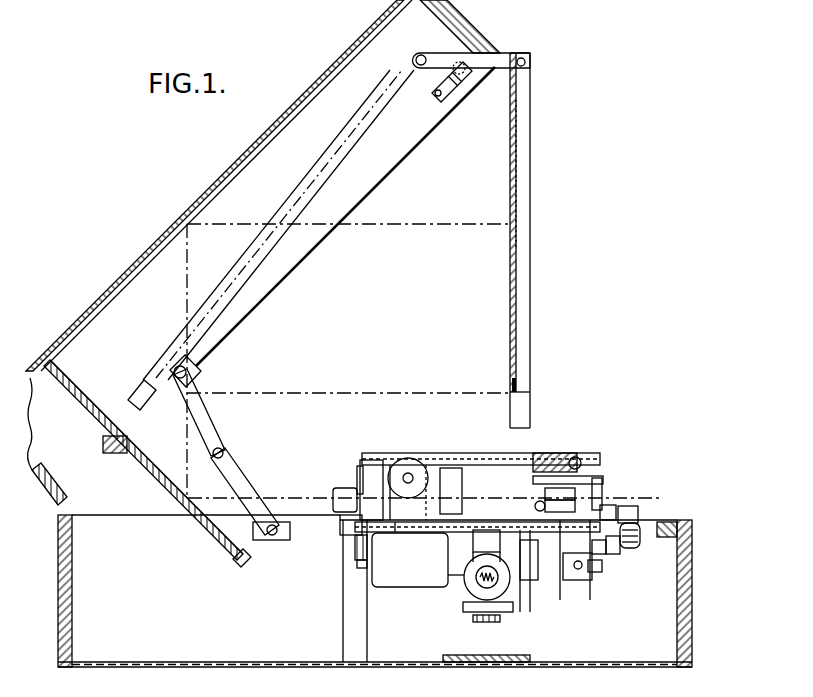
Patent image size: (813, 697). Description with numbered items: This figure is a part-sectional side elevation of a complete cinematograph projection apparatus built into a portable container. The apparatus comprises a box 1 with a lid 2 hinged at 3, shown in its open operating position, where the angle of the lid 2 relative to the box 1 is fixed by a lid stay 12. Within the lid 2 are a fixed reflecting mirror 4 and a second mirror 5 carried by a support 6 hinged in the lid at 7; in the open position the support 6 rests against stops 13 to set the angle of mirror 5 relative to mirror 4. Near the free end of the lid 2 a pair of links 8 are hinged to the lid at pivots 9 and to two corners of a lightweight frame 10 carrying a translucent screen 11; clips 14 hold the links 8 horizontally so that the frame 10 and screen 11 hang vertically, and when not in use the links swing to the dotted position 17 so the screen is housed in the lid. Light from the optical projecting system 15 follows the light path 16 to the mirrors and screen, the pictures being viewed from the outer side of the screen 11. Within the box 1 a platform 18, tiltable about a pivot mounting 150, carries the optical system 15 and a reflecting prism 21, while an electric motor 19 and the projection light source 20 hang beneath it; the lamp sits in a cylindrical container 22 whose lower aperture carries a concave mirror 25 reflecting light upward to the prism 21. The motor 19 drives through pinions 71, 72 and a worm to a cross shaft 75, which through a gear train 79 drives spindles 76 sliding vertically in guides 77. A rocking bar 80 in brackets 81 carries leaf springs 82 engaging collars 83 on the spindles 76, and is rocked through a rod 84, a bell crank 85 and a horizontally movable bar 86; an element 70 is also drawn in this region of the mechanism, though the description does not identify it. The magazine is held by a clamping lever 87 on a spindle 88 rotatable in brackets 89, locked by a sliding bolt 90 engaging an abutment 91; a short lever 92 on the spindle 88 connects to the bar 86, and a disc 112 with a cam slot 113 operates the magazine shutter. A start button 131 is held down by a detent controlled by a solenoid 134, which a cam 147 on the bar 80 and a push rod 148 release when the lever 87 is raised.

The box 1 is at (64, 592).
The lid 2 is at (286, 270).
The hinge 3 is at (58, 513).
The reflecting mirror 4 is at (141, 272).
The reflecting mirror 5 is at (160, 470).
The support 6 is at (150, 471).
The hinge 7 is at (45, 377).
The links 8 is at (441, 54).
The pivots 9 is at (416, 60).
The lightweight frame 10 is at (326, 148).
The translucent screen 11 is at (518, 180).
The lid stay 12 is at (249, 462).
The stops 13 is at (108, 444).
The clips 14 is at (461, 76).
The optical projecting system 15 is at (345, 488).
The light path 16 is at (436, 224).
The folded position of links 17 is at (354, 120).
The platform 18 is at (666, 522).
The electric motor 19 is at (410, 587).
The projection light source 20 is at (466, 590).
The reflecting prism 21 is at (484, 456).
The cylindrical container 22 is at (448, 575).
The concave mirror 25 is at (472, 612).
The lever 70 is at (597, 478).
The pinion 71 is at (357, 565).
The pinion 72 is at (355, 545).
The cross shaft 75 is at (604, 554).
The spindles 76 is at (530, 612).
The guides 77 is at (560, 600).
The gear train 79 is at (574, 570).
The rocking bar 80 is at (582, 580).
The brackets 81 is at (600, 572).
The leaf springs 82 is at (590, 600).
The collars 83 is at (518, 612).
The rod 84 is at (550, 509).
The bell crank 85 is at (552, 500).
The horizontally movable bar 86 is at (545, 456).
The clamping lever 87 is at (578, 458).
The spindle 88 is at (410, 470).
The brackets 89 is at (390, 465).
The sliding bolt 90 is at (370, 460).
The abutment 91 is at (360, 466).
The short lever 92 is at (428, 465).
The disc 112 is at (420, 532).
The cam slot 113 is at (395, 532).
The start button 131 is at (632, 506).
The solenoid 134 is at (640, 544).
The cam 147 is at (620, 550).
The push rod 148 is at (608, 505).
The pivot mounting 150 is at (340, 524).